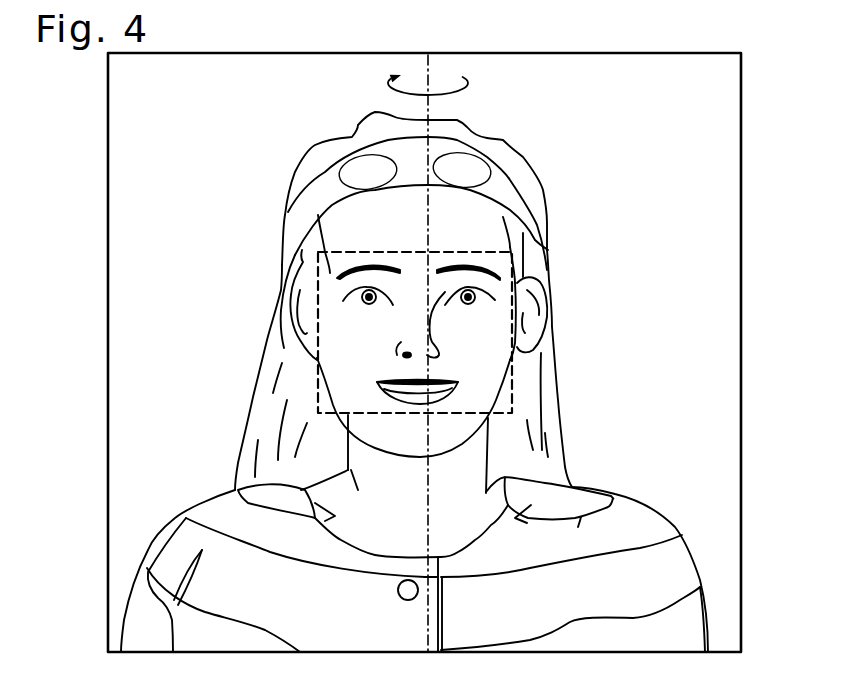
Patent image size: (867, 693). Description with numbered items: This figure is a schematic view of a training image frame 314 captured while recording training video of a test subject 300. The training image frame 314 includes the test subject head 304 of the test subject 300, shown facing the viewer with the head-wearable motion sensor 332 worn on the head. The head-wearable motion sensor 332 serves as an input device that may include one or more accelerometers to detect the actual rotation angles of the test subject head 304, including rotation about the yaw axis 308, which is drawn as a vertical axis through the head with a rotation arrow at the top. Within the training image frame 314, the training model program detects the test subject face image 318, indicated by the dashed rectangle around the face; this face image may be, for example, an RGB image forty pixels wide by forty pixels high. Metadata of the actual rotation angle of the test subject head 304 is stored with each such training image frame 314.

The test subject 300 is at (622, 149).
The test subject head 304 is at (577, 393).
The yaw axis 308 is at (430, 58).
The training image frame 314 is at (742, 103).
The test subject face image 318 is at (316, 387).
The head-wearable motion sensor 332 is at (535, 242).